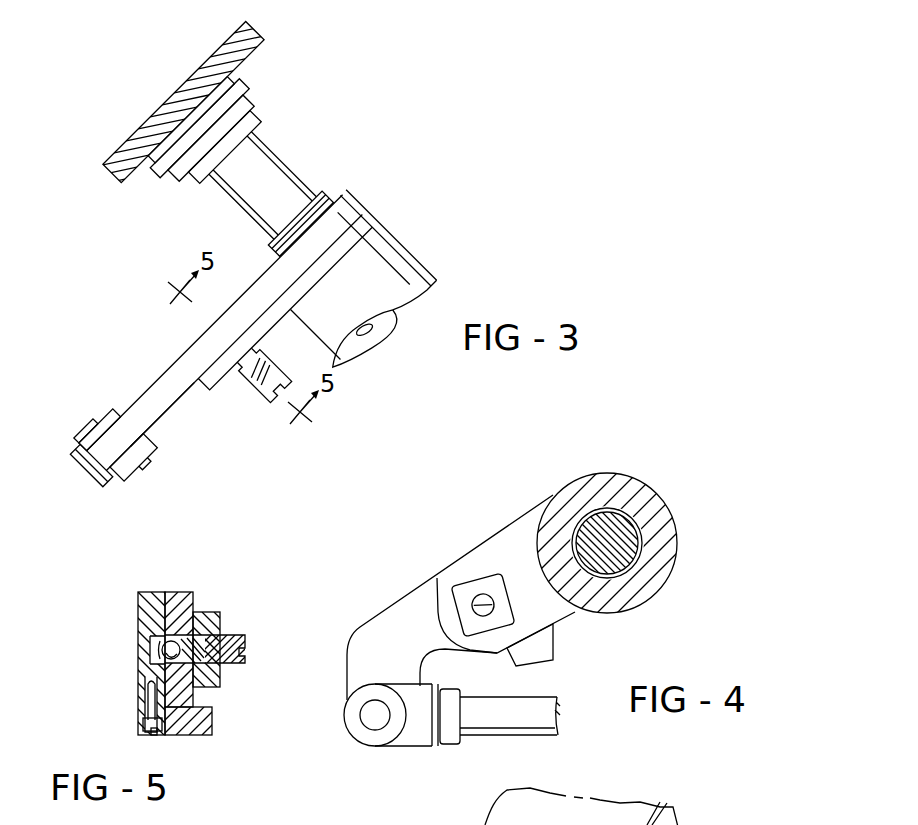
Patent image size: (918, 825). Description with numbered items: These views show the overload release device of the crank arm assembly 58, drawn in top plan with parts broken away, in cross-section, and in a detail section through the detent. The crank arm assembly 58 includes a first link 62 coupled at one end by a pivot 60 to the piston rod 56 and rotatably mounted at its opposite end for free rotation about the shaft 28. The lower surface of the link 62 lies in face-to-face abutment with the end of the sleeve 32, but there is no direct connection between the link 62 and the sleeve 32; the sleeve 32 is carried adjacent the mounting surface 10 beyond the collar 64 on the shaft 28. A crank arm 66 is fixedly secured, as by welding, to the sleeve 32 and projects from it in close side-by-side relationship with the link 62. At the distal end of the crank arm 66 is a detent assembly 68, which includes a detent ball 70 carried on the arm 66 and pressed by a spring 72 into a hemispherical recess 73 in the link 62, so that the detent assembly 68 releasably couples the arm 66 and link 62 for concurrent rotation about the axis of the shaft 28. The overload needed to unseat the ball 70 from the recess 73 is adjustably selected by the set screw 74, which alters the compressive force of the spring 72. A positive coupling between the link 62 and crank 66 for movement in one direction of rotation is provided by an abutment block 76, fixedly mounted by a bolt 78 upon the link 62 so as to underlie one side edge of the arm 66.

In FIG. 3, the support wall 10 is at (205, 62).
In FIG. 3, the shaft 28 is at (273, 153).
In FIG. 4, the shaft 28 is at (636, 545).
In FIG. 3, the sleeve 32 is at (402, 245).
In FIG. 4, the sleeve 32 is at (630, 480).
In FIG. 4, the piston rod 56 is at (530, 696).
In FIG. 3, the crank arm assembly 58 is at (158, 378).
In FIG. 4, the crank arm assembly 58 is at (451, 560).
In FIG. 3, the pivot 60 is at (93, 427).
In FIG. 4, the pivot 60 is at (378, 732).
In FIG. 3, the first link 62 is at (155, 422).
In FIG. 5, the first link 62 is at (138, 600).
In FIG. 3, the collar 64 is at (323, 190).
In FIG. 3, the crank arm 66 is at (269, 338).
In FIG. 5, the crank arm 66 is at (172, 592).
In FIG. 3, the detent assembly 68 is at (236, 382).
In FIG. 4, the detent assembly 68 is at (488, 568).
In FIG. 5, the detent assembly 68 is at (222, 611).
In FIG. 5, the detent ball 70 is at (168, 660).
In FIG. 5, the spring 72 is at (183, 635).
In FIG. 5, the hemispherical recess 73 is at (165, 646).
In FIG. 5, the set screw 74 is at (245, 636).
In FIG. 4, the abutment block 76 is at (556, 645).
In FIG. 5, the abutment block 76 is at (212, 722).
In FIG. 5, the bolt 78 is at (152, 737).